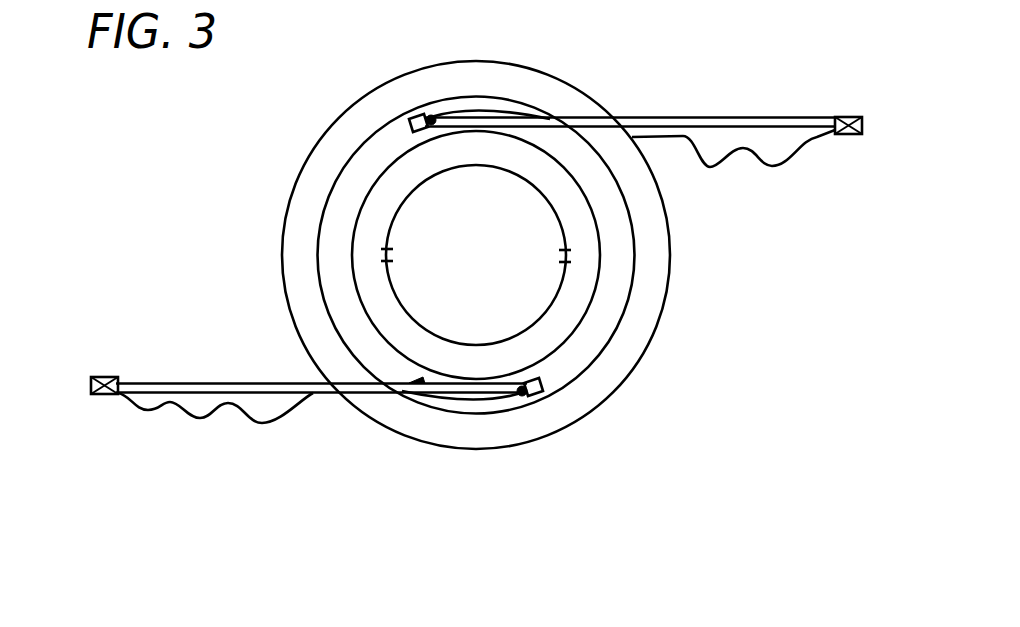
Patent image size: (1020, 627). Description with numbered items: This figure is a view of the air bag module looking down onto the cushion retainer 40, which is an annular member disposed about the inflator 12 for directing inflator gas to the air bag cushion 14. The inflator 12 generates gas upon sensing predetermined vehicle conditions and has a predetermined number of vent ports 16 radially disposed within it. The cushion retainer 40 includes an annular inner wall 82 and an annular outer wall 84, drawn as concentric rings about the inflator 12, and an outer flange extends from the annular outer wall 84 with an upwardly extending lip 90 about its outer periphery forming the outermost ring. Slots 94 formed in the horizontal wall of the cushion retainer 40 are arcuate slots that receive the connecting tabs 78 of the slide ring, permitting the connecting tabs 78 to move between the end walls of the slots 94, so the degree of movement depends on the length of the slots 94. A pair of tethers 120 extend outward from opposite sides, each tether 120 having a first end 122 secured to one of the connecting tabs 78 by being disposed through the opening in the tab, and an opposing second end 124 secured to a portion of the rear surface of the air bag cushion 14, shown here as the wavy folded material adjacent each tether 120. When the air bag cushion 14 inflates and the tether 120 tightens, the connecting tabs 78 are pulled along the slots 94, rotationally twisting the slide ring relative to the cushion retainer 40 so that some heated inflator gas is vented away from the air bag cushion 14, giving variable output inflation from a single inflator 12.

The inflator 12 is at (497, 287).
The air bag cushion 14 is at (796, 152).
The vent ports 16 is at (391, 252).
The cushion retainer 40 is at (351, 147).
The connecting tabs 78 is at (426, 114).
The annular inner wall 82 is at (350, 280).
The annular outer wall 84 is at (317, 243).
The upwardly extending lip 90 is at (297, 175).
The slots 94 is at (531, 130).
The tethers 120 is at (723, 117).
The first end 122 is at (437, 116).
The second end 124 is at (852, 117).